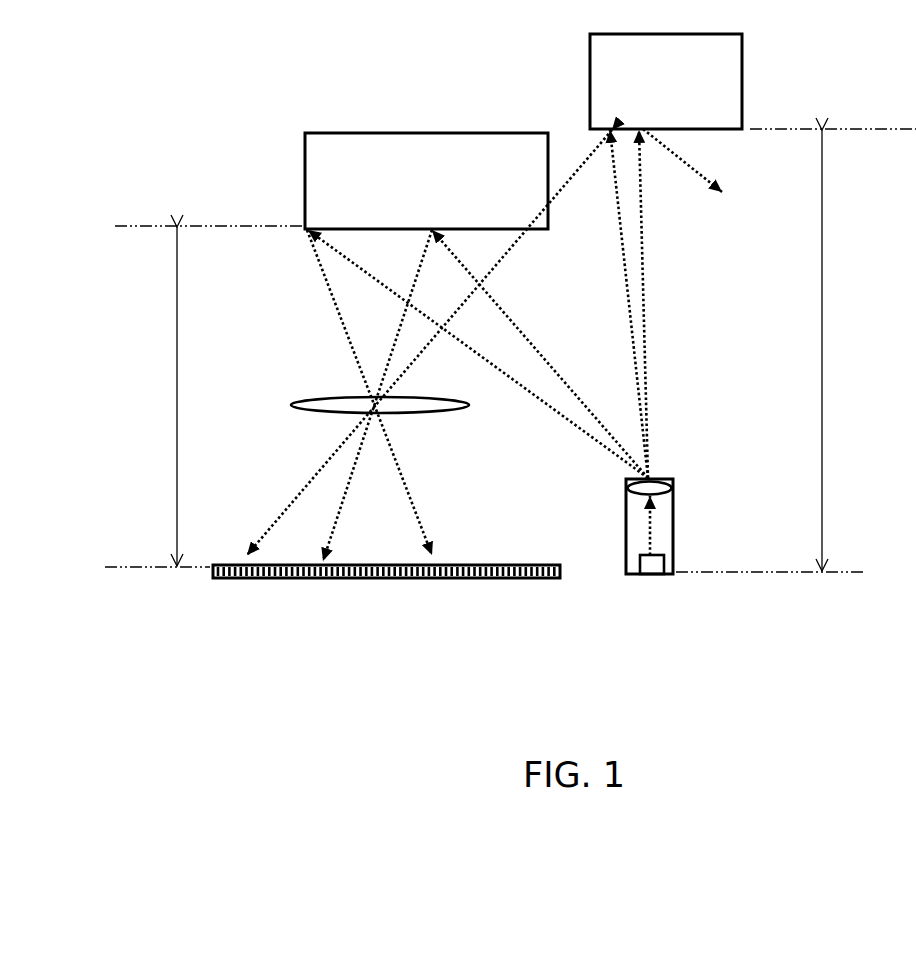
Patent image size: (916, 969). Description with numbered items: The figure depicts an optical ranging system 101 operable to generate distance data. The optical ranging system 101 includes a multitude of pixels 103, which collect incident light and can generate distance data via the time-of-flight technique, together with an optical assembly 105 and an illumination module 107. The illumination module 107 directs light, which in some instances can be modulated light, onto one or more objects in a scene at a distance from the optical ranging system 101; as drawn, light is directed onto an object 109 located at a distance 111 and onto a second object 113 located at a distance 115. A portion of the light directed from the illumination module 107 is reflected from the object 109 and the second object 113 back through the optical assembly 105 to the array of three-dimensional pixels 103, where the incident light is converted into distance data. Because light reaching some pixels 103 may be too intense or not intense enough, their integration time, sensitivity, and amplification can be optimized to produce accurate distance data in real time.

The optical ranging system 101 is at (183, 189).
The pixels 103 is at (363, 570).
The optical assembly 105 is at (289, 400).
The illumination module 107 is at (680, 531).
The object 109 is at (426, 181).
The distance 111 is at (153, 396).
The second object 113 is at (666, 81).
The distance 115 is at (847, 350).